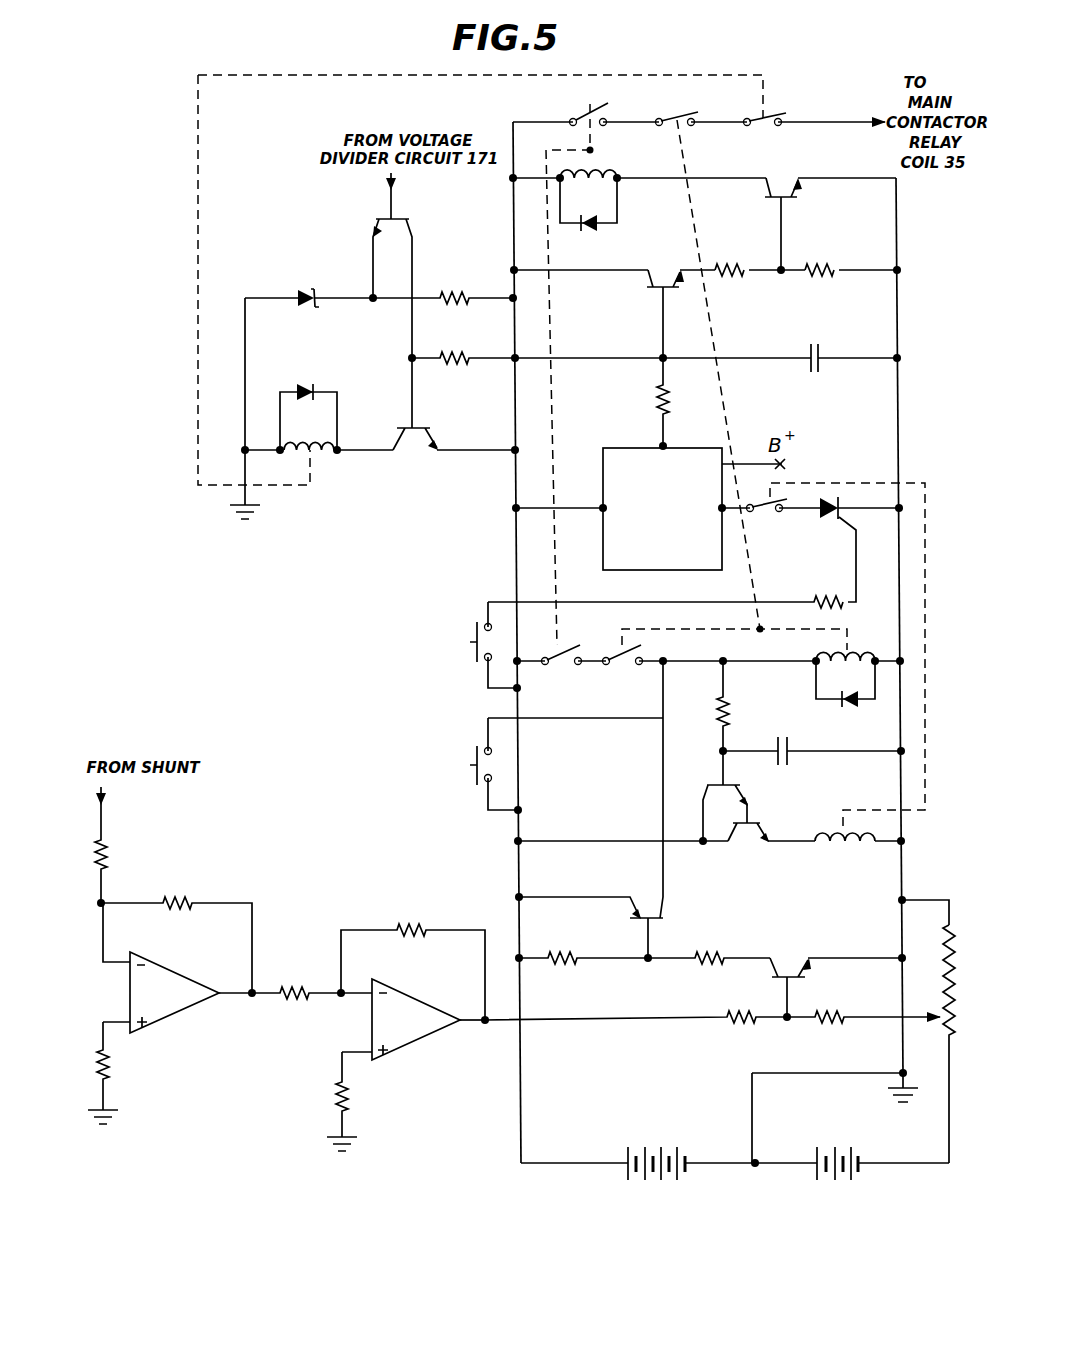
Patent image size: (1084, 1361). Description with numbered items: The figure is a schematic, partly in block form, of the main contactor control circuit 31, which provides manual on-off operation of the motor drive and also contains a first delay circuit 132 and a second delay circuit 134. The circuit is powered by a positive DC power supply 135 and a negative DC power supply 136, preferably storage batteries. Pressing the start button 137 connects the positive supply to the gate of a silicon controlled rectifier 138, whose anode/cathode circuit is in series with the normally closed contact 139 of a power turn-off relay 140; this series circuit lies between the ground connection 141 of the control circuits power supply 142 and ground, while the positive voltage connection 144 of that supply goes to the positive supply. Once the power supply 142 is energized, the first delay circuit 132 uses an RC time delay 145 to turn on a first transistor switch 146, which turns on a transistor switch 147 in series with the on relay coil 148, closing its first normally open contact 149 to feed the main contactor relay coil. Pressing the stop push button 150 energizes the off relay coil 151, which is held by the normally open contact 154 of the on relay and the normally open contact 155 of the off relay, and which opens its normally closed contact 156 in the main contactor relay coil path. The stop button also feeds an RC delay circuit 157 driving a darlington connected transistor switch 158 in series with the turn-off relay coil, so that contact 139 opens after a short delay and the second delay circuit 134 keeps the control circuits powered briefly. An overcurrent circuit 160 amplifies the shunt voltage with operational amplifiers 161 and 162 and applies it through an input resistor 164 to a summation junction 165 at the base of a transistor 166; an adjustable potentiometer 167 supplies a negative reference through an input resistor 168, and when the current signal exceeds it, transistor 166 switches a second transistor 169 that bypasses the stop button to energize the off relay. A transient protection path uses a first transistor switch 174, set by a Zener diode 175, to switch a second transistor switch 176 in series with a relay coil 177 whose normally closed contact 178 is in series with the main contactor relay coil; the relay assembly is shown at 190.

The main contactor control circuit 31 is at (456, 560).
The first delay circuit 132 is at (808, 312).
The second delay circuit 134 is at (843, 777).
The positive DC power supply 135 is at (660, 1183).
The negative DC power supply 136 is at (850, 1180).
The start button 137 is at (452, 646).
The silicon controlled rectifier 138 is at (838, 500).
The normally closed contact 139 is at (768, 512).
The power turn-off relay 140 is at (845, 851).
The ground connection 141 is at (724, 512).
The control circuits power supply 142 is at (630, 572).
The positive voltage connection 144 is at (603, 512).
The RC time delay 145 is at (692, 386).
The first transistor switch 146 is at (663, 270).
The transistor switch 147 is at (780, 176).
The on relay coil 148 is at (596, 172).
The first normally open contact 149 is at (592, 108).
The stop push button 150 is at (452, 773).
The off relay coil 151 is at (856, 652).
The normally open contact 154 is at (561, 654).
The normally open contact 155 is at (622, 654).
The normally closed contact 156 is at (672, 118).
The RC delay circuit 157 is at (750, 734).
The darlington connected transistor switch 158 is at (690, 806).
The overcurrent circuit 160 is at (288, 969).
The operational amplifier 161 is at (171, 1020).
The operational amplifier 162 is at (411, 1046).
The input resistor 164 is at (742, 1030).
The summation junction 165 is at (787, 1022).
The transistor 166 is at (777, 945).
The adjustable potentiometer 167 is at (956, 1021).
The input resistor 168 is at (832, 1025).
The second transistor 169 is at (672, 907).
The first transistor switch 174 is at (416, 258).
The Zener diode 175 is at (301, 318).
The second transistor switch 176 is at (432, 441).
The relay coil 177 is at (290, 462).
The normally closed contact 178 is at (775, 118).
The relay 190 is at (362, 466).